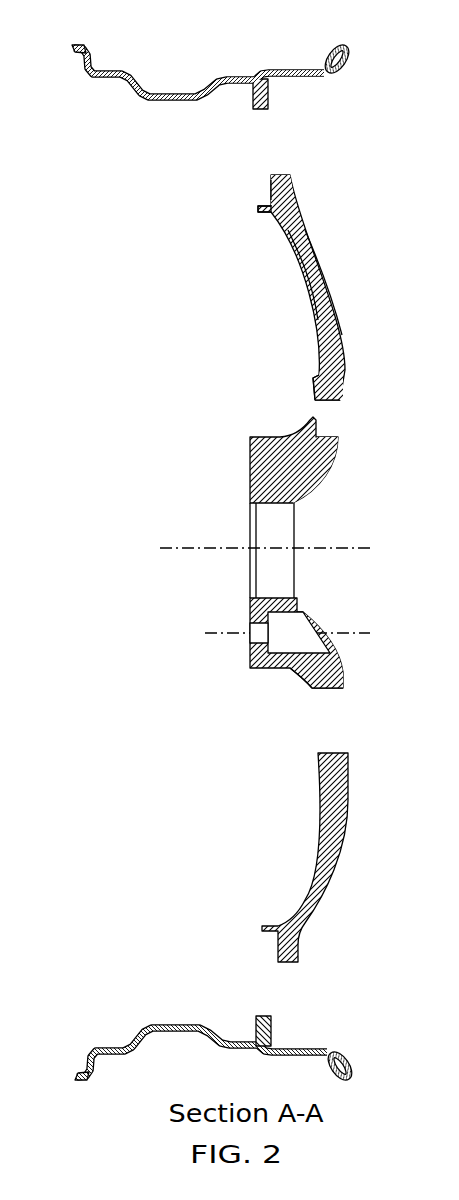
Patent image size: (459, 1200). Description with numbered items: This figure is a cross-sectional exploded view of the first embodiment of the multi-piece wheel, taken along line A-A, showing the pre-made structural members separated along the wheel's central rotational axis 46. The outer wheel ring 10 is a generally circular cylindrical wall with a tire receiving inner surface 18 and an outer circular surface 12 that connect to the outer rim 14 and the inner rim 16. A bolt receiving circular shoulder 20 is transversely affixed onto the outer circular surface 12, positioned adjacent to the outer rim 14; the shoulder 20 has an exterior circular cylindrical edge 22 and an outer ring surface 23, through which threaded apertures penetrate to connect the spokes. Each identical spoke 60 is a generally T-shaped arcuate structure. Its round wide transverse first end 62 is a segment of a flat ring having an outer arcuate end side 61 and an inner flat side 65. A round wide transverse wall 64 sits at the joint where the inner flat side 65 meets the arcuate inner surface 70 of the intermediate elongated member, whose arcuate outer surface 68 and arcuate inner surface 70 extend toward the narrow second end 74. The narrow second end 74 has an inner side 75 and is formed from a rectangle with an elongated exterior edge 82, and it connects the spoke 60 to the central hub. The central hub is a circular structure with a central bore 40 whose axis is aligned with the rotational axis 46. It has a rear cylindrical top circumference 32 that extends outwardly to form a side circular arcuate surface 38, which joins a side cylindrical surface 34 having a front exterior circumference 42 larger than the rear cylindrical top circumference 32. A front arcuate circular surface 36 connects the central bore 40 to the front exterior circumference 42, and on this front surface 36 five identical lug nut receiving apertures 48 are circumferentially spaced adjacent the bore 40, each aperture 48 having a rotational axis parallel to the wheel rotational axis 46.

The outer wheel ring 10 is at (108, 30).
The outer circular surface 12 is at (318, 76).
The outer rim 14 is at (345, 48).
The inner rim 16 is at (74, 50).
The tire receiving inner surface 18 is at (282, 74).
The bolt receiving circular shoulder 20 is at (244, 99).
The exterior circular cylindrical edge 22 is at (260, 109).
The outer ring surface 23 is at (268, 92).
The rear cylindrical top circumference 32 is at (248, 437).
The side cylindrical surface 34 is at (331, 689).
The front arcuate circular surface 36 is at (320, 475).
The side circular arcuate surface 38 is at (277, 668).
The central bore 40 is at (288, 580).
The front exterior circumference 42 is at (344, 689).
The central rotational axis 46 is at (282, 585).
The lug nut receiving apertures 48 is at (320, 645).
The spoke 60 is at (358, 284).
The outer arcuate end side 61 is at (285, 176).
The round wide transverse first end 62 is at (304, 179).
The round wide transverse wall 64 is at (262, 211).
The inner flat side 65 is at (270, 187).
The arcuate outer surface 68 is at (327, 262).
The arcuate inner surface 70 is at (310, 272).
The narrow second end 74 is at (352, 384).
The inner side 75 is at (313, 390).
The elongated exterior edge 82 is at (332, 402).